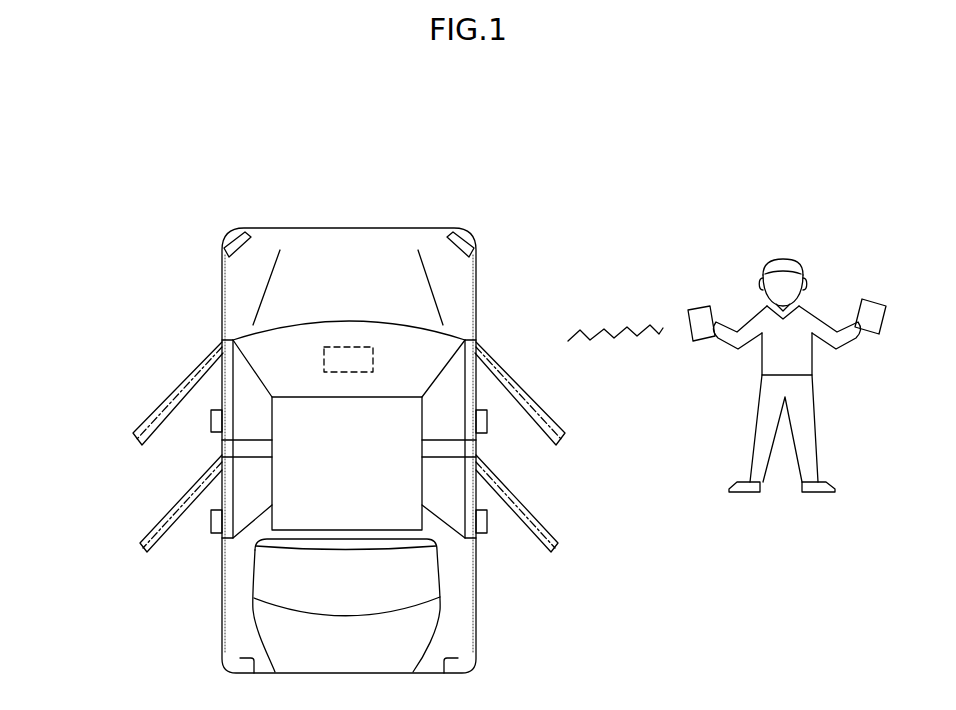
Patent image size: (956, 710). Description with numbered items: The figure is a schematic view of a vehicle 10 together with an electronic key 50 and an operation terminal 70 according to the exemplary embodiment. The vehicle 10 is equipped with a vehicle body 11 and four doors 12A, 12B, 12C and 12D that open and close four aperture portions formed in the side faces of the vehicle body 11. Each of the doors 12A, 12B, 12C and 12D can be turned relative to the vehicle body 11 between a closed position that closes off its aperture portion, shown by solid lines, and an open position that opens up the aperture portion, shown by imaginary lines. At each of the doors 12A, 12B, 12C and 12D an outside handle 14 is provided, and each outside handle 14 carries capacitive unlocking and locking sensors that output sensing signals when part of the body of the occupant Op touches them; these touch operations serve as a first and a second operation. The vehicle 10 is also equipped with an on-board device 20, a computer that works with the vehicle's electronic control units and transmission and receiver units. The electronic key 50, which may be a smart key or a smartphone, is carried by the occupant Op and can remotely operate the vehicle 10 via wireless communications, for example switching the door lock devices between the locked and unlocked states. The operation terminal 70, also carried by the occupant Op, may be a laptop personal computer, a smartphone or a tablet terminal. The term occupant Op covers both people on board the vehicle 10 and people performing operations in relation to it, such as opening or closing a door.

The vehicle 10 is at (122, 267).
The vehicle body 11 is at (357, 243).
The door 12A is at (476, 438).
The door 12B is at (477, 493).
The door 12C is at (222, 438).
The door 12D is at (221, 493).
The outside handle 14 is at (210, 423).
The on-board device 20 is at (350, 347).
The electronic key 50 is at (703, 308).
The operation terminal 70 is at (873, 300).
The occupant Op is at (784, 260).